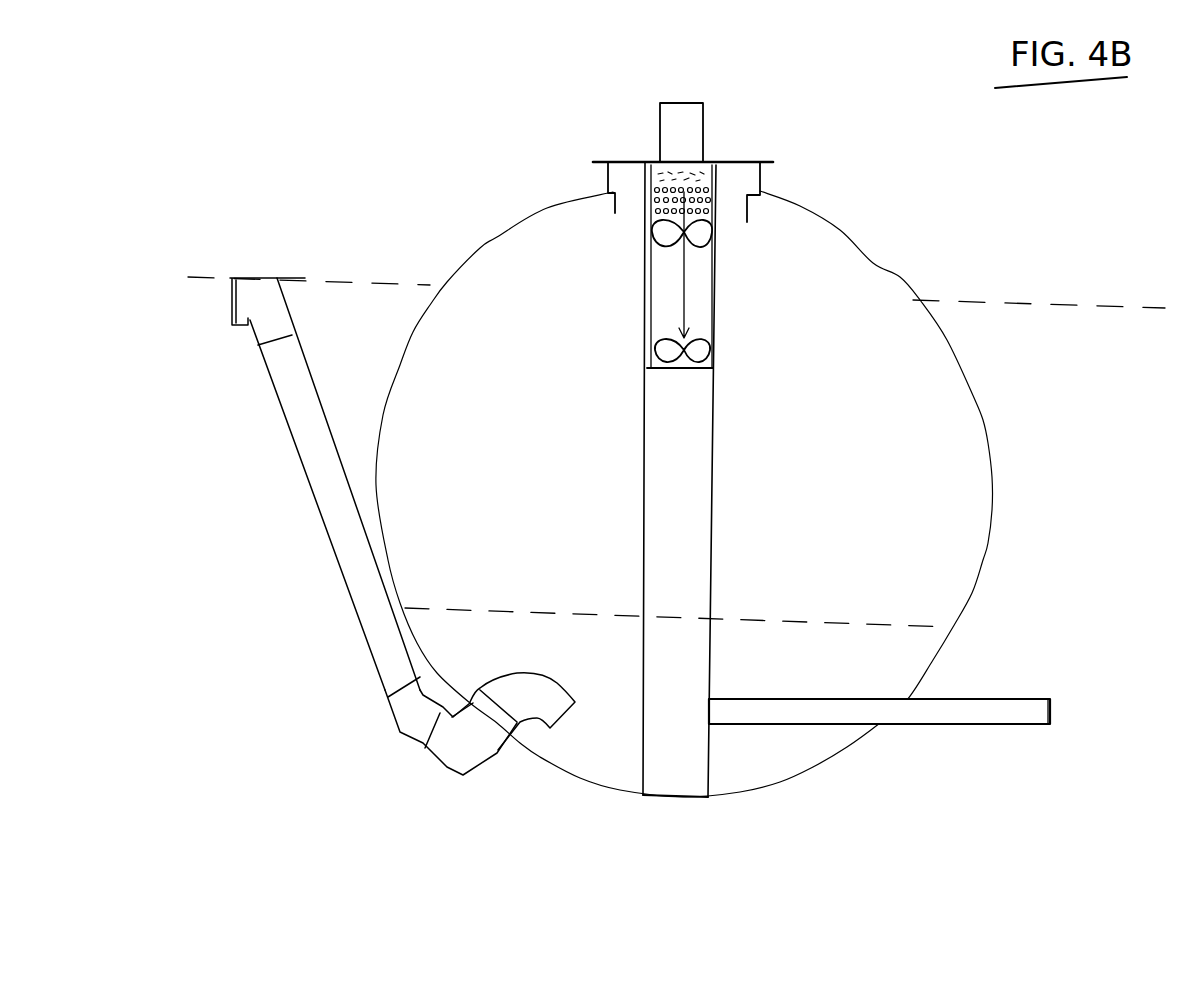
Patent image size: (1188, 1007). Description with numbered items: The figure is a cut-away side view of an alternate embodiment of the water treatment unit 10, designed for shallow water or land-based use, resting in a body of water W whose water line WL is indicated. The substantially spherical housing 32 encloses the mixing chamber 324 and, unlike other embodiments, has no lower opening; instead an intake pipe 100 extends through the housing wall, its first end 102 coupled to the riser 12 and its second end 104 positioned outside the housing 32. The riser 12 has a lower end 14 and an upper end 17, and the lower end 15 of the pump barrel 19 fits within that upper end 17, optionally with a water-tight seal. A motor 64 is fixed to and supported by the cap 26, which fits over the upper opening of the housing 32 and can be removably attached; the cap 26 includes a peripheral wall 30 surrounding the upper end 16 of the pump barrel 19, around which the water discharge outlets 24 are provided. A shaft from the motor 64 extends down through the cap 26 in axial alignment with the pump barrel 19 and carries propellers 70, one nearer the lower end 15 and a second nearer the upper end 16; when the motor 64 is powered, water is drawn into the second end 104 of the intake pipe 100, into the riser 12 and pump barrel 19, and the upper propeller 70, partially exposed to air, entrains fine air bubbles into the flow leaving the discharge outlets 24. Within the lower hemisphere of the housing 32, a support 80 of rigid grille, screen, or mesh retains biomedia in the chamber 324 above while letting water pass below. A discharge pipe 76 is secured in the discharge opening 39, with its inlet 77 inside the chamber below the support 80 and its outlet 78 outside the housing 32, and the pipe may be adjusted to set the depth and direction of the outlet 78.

The water treatment unit 10 is at (916, 205).
The riser 12 is at (712, 542).
The lower end of riser 14 is at (708, 780).
The lower end of pump barrel 15 is at (687, 368).
The upper end of pump barrel 16 is at (717, 210).
The upper end of riser 17 is at (645, 263).
The pump barrel 19 is at (647, 200).
The water discharge outlets 24 is at (648, 215).
The cap 26 is at (628, 160).
The peripheral wall 30 is at (615, 203).
The housing 32 is at (480, 249).
The discharge opening 39 is at (472, 700).
The motor 64 is at (680, 131).
The propeller 70 is at (645, 367).
The discharge pipe 76 is at (353, 580).
The inlet of discharge pipe 77 is at (573, 722).
The outlet of discharge pipe 78 is at (228, 298).
The support 80 is at (527, 612).
The intake pipe 100 is at (938, 727).
The first end of intake pipe 102 is at (708, 710).
The second end of intake pipe 104 is at (1055, 712).
The mixing chamber 324 is at (460, 392).
The body of water W is at (322, 310).
The water line WL is at (1045, 295).